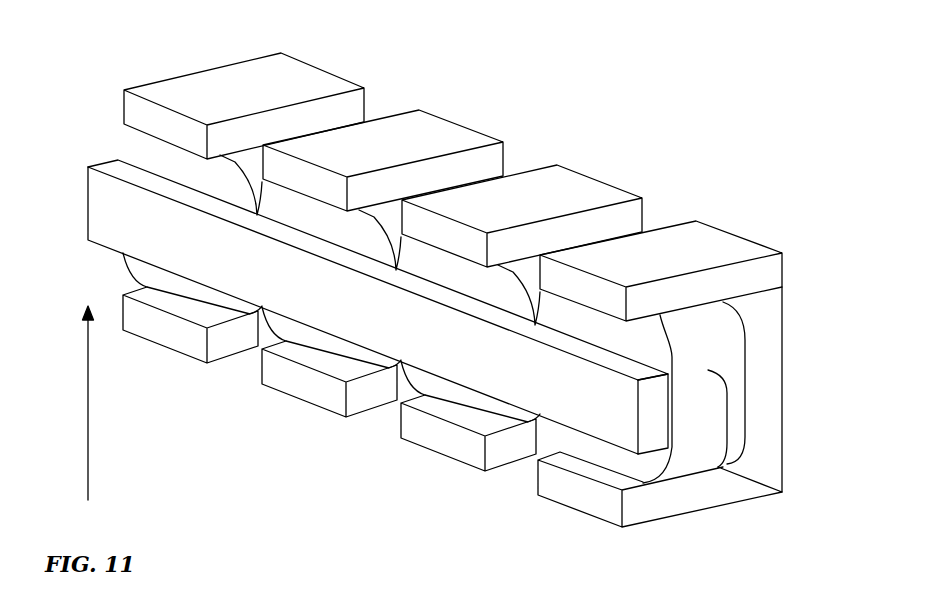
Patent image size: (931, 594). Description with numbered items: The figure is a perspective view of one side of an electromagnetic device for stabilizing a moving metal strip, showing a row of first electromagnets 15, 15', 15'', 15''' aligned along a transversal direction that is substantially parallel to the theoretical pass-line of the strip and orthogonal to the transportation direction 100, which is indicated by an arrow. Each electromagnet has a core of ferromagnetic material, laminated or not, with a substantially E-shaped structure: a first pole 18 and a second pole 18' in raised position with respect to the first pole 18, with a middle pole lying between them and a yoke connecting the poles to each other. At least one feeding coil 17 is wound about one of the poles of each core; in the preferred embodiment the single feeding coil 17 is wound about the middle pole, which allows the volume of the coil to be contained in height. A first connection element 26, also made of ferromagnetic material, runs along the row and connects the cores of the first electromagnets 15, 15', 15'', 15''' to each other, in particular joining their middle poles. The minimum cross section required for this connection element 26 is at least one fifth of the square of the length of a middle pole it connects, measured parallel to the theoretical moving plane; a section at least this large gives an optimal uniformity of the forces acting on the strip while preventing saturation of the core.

The first electromagnet 15 is at (704, 332).
The first electromagnet 15' is at (514, 270).
The first electromagnet 15'' is at (393, 219).
The first electromagnet 15''' is at (253, 162).
The feeding coil 17 is at (419, 305).
The first pole 18 is at (453, 170).
The second pole 18' is at (455, 436).
The first connection element 26 is at (600, 426).
The transportation direction 100 is at (78, 383).